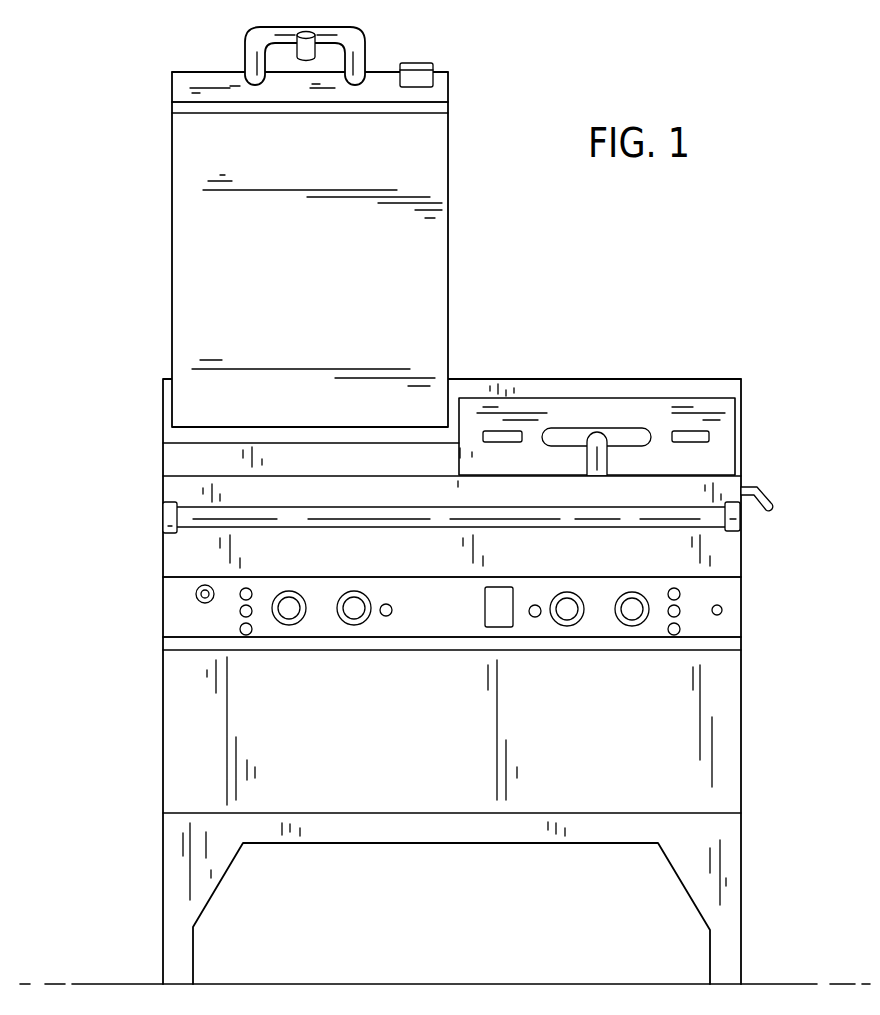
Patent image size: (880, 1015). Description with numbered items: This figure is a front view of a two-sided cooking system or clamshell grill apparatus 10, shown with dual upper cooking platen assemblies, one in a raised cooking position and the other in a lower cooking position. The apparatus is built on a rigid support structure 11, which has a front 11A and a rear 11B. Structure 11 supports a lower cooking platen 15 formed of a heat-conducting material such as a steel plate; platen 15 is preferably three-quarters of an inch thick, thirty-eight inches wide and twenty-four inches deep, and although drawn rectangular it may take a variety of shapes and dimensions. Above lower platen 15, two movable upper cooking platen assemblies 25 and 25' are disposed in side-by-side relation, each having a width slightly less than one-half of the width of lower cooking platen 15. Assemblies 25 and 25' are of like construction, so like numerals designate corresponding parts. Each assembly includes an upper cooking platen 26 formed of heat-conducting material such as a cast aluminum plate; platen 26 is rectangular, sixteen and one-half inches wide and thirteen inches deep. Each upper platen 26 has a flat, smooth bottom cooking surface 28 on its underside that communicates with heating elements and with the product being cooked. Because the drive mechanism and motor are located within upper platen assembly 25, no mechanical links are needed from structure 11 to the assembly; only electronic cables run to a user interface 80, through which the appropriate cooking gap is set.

The clamshell grill apparatus 10 is at (656, 218).
The rigid support structure 11 is at (742, 686).
The front 11A is at (742, 593).
The rear 11B is at (607, 379).
The lower cooking platen 15 is at (742, 484).
The upper cooking platen assembly 25 is at (342, 98).
The upper cooking platen assembly 25' is at (611, 398).
The upper cooking platen 26 is at (450, 316).
The bottom cooking surface 28 is at (323, 280).
The user interface 80 is at (485, 610).